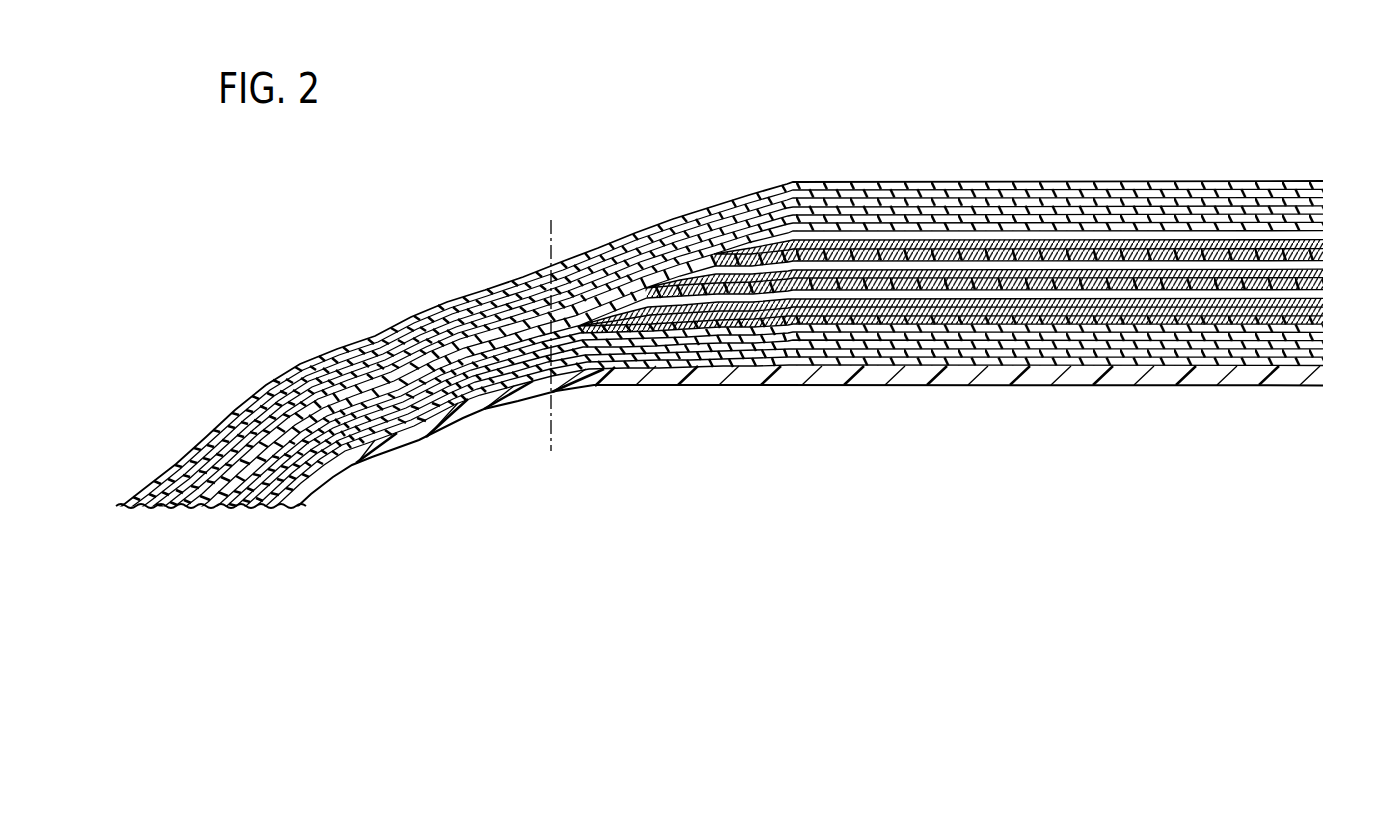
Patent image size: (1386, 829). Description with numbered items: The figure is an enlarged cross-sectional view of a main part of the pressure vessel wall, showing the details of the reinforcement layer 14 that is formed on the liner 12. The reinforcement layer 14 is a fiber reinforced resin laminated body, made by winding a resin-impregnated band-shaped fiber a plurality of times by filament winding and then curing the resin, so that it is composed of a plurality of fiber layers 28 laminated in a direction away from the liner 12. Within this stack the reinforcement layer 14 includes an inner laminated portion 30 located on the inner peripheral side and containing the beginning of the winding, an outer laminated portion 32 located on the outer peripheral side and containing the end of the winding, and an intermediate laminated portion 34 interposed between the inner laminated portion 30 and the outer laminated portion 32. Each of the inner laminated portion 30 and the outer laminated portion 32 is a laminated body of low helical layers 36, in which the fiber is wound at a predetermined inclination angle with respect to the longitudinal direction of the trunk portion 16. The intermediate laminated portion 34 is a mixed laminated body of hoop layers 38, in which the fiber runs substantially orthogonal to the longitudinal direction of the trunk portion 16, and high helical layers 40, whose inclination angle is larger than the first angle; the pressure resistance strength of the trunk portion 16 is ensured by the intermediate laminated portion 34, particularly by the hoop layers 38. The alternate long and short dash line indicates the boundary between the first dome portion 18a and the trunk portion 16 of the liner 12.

The liner 12 is at (811, 378).
The reinforcement layer 14 is at (827, 172).
The trunk portion 16 is at (702, 367).
The first dome portion 18a is at (395, 427).
The fiber layers 28 is at (728, 309).
The inner laminated portion 30 is at (1318, 308).
The outer laminated portion 32 is at (1318, 173).
The intermediate laminated portion 34 is at (1318, 223).
The low helical layer 36 is at (1090, 222).
The hoop layer 38 is at (1181, 238).
The high helical layer 40 is at (1243, 247).